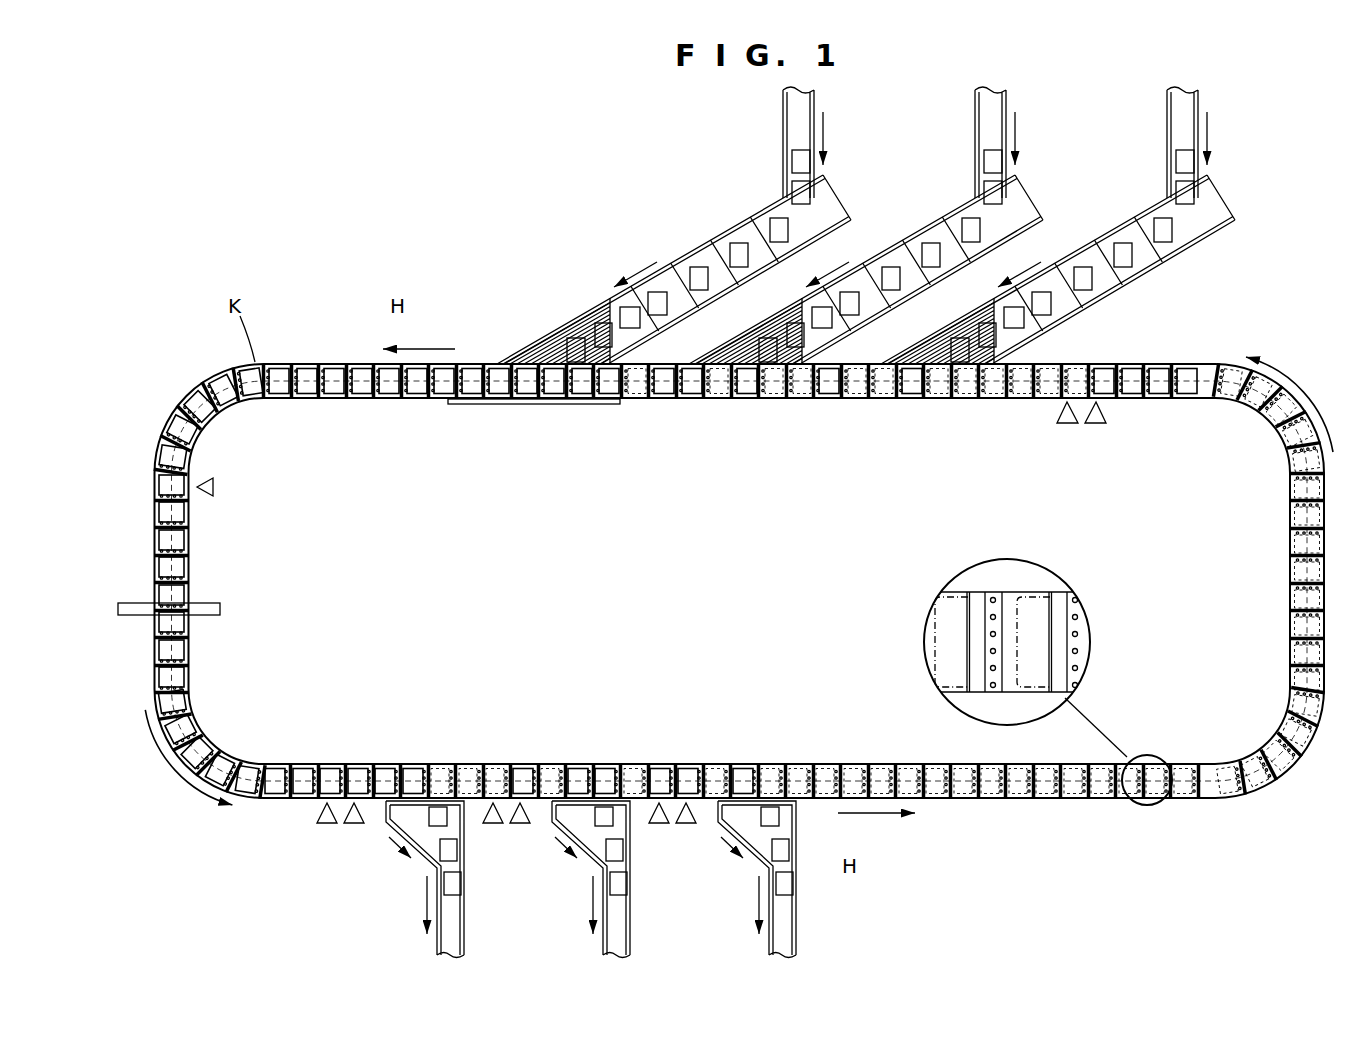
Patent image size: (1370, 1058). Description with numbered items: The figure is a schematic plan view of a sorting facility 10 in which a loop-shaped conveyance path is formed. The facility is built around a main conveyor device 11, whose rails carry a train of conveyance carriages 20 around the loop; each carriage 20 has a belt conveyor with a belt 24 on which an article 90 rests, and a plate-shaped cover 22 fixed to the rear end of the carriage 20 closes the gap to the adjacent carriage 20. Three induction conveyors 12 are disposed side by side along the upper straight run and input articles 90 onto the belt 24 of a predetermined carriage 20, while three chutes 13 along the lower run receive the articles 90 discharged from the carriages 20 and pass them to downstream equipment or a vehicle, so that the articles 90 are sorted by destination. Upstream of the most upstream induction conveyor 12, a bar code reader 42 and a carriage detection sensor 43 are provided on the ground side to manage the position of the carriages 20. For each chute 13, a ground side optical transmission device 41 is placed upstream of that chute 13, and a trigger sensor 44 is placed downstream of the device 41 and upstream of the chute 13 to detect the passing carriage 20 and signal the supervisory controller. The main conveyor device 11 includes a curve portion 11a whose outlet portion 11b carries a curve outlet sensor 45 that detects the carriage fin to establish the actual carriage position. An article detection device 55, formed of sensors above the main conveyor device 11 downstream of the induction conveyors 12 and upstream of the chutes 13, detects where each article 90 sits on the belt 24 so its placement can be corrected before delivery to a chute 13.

The sorting facility 10 is at (222, 247).
The main conveyor device 11 is at (1020, 800).
The curve portion 11a is at (213, 425).
The outlet portion 11b is at (158, 482).
The induction conveyor 12 is at (755, 198).
The chute 13 is at (432, 858).
The conveyance carriage 20 is at (198, 392).
The cover 22 is at (978, 600).
The belt 24 is at (1027, 692).
The ground side optical transmission device 41 is at (318, 822).
The bar code reader 42 is at (1097, 430).
The carriage detection sensor 43 is at (1066, 430).
The trigger sensor 44 is at (352, 826).
The curve outlet sensor 45 is at (216, 487).
The article detection device 55 is at (140, 604).
The article 90 is at (888, 262).